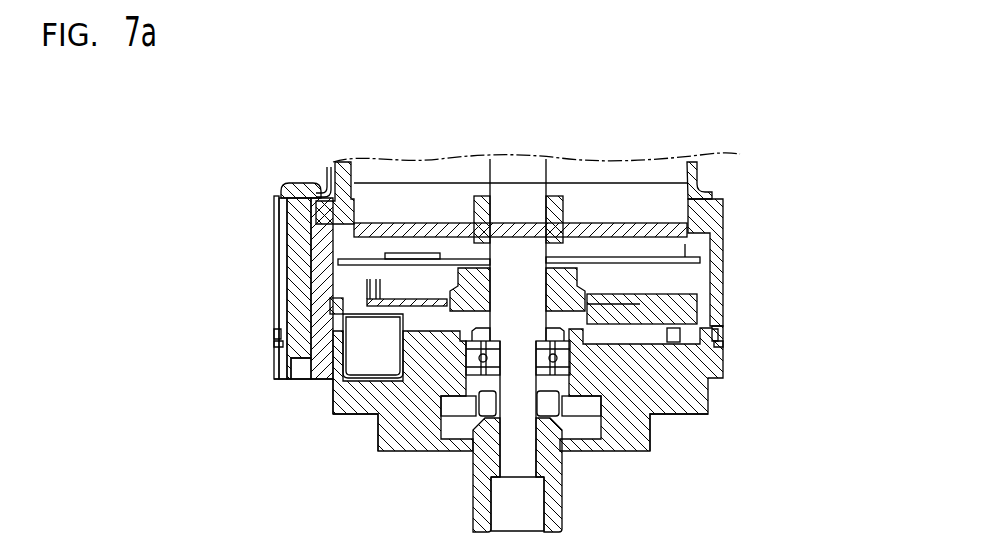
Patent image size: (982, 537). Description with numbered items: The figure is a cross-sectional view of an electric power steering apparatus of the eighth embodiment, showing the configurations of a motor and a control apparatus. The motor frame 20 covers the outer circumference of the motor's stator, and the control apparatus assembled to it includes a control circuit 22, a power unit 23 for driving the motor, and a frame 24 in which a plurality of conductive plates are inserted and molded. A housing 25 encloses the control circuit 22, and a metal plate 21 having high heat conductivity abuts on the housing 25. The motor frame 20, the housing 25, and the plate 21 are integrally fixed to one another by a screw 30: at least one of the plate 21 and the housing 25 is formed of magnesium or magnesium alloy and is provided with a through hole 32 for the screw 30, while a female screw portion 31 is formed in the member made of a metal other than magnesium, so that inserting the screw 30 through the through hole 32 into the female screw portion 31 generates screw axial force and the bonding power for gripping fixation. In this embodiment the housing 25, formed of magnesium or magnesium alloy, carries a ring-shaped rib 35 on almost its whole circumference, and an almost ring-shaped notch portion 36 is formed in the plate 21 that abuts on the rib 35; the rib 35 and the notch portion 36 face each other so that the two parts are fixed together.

The motor frame 20 is at (705, 170).
The plate 21 is at (333, 397).
The control circuit 22 is at (707, 232).
The power unit 23 is at (632, 330).
The frame 24 is at (345, 300).
The housing 25 is at (715, 252).
The screw 30 is at (300, 182).
The female screw portion 31 is at (283, 345).
The through hole 32 is at (283, 253).
The ring-shaped rib 35 is at (277, 332).
The notch portion 36 is at (277, 342).